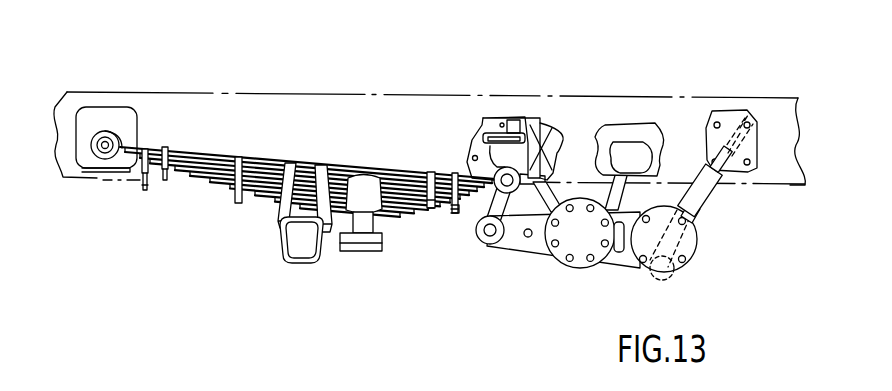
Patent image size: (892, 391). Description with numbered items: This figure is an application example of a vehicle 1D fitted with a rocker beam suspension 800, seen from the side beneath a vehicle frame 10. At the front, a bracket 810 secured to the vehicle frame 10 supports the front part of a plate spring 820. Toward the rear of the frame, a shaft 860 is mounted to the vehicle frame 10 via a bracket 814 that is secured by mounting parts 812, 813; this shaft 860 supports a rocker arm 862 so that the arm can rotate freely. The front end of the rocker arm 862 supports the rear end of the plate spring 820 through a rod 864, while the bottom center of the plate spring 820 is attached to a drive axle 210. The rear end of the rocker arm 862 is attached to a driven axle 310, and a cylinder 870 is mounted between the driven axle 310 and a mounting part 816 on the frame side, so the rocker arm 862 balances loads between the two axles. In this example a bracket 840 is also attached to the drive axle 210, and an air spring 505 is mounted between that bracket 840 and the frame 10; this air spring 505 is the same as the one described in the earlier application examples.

The vehicle frame 10 is at (395, 118).
The suspension 800 is at (530, 53).
The vehicle 1D is at (722, 47).
The bracket 810 is at (112, 118).
The plate spring 820 is at (270, 168).
The drive axle 210 is at (297, 250).
The air spring 505 is at (362, 172).
The bracket 840 is at (364, 248).
The rocker arm 862 is at (533, 248).
The rod 864 is at (492, 206).
The mounting part 812 is at (492, 120).
The bracket 814 is at (573, 183).
The mounting part 813 is at (633, 148).
The mounting part 816 is at (740, 128).
The shaft 860 is at (580, 268).
The driven axle 310 is at (648, 262).
The cylinder 870 is at (696, 212).